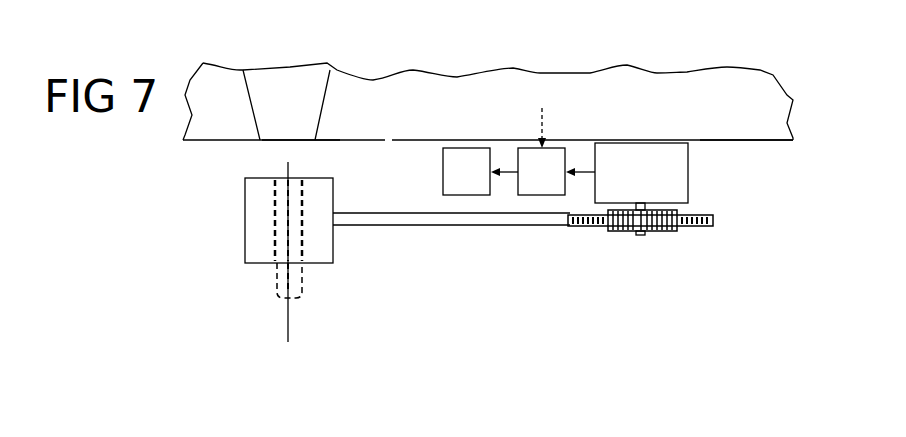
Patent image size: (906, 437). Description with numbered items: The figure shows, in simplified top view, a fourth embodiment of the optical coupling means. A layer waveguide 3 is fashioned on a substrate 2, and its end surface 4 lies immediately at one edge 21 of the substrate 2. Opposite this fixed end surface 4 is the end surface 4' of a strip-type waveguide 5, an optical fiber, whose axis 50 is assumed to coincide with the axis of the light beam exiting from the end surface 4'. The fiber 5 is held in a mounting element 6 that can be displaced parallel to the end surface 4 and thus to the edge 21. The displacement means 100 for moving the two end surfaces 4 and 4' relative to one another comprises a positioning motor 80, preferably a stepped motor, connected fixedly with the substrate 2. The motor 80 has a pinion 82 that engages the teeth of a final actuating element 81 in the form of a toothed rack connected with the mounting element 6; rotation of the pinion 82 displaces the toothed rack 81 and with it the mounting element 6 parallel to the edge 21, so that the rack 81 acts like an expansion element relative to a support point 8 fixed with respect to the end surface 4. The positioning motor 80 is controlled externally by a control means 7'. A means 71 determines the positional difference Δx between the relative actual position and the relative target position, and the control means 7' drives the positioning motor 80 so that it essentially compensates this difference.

The substrate 2 is at (652, 95).
The layer waveguide 3 is at (288, 88).
The end surface 4 is at (310, 159).
The end surface 4' is at (249, 204).
The strip-type waveguide 5 is at (277, 283).
The mounting element 6 is at (255, 220).
The control means 7' is at (528, 139).
The support point 8 is at (634, 268).
The edge 21 is at (767, 141).
The axis 50 is at (287, 317).
The means for determination of the positional difference 71 is at (443, 172).
The positioning motor 80 is at (702, 190).
The toothed rack 81 is at (572, 228).
The pinion 82 is at (620, 233).
The displacement means 100 is at (430, 250).